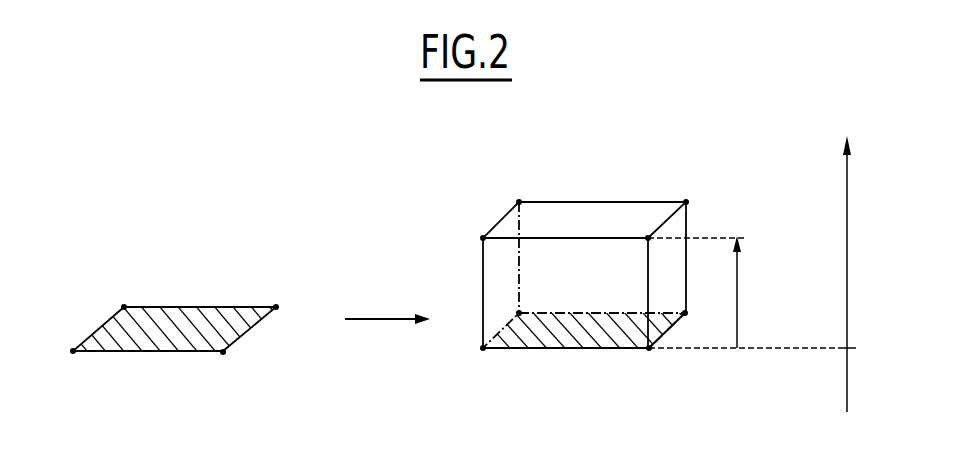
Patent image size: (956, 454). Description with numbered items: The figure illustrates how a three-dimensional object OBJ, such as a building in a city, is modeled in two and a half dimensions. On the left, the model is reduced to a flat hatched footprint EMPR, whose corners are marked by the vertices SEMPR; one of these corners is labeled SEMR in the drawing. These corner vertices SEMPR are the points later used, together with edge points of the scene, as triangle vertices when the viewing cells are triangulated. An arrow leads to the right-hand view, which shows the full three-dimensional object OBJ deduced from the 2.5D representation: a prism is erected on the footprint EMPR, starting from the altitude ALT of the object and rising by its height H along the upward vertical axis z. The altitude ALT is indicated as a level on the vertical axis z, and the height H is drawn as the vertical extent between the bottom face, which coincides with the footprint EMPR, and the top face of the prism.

The footprint EMPR is at (190, 317).
The reference summit (corner) of footprint SEMR is at (124, 306).
The vertices at the corners of the footprint SEMPR is at (276, 307).
The object OBJ is at (584, 217).
The height H is at (696, 292).
The altitude ALT is at (775, 349).
The upward vertical axis z is at (857, 273).